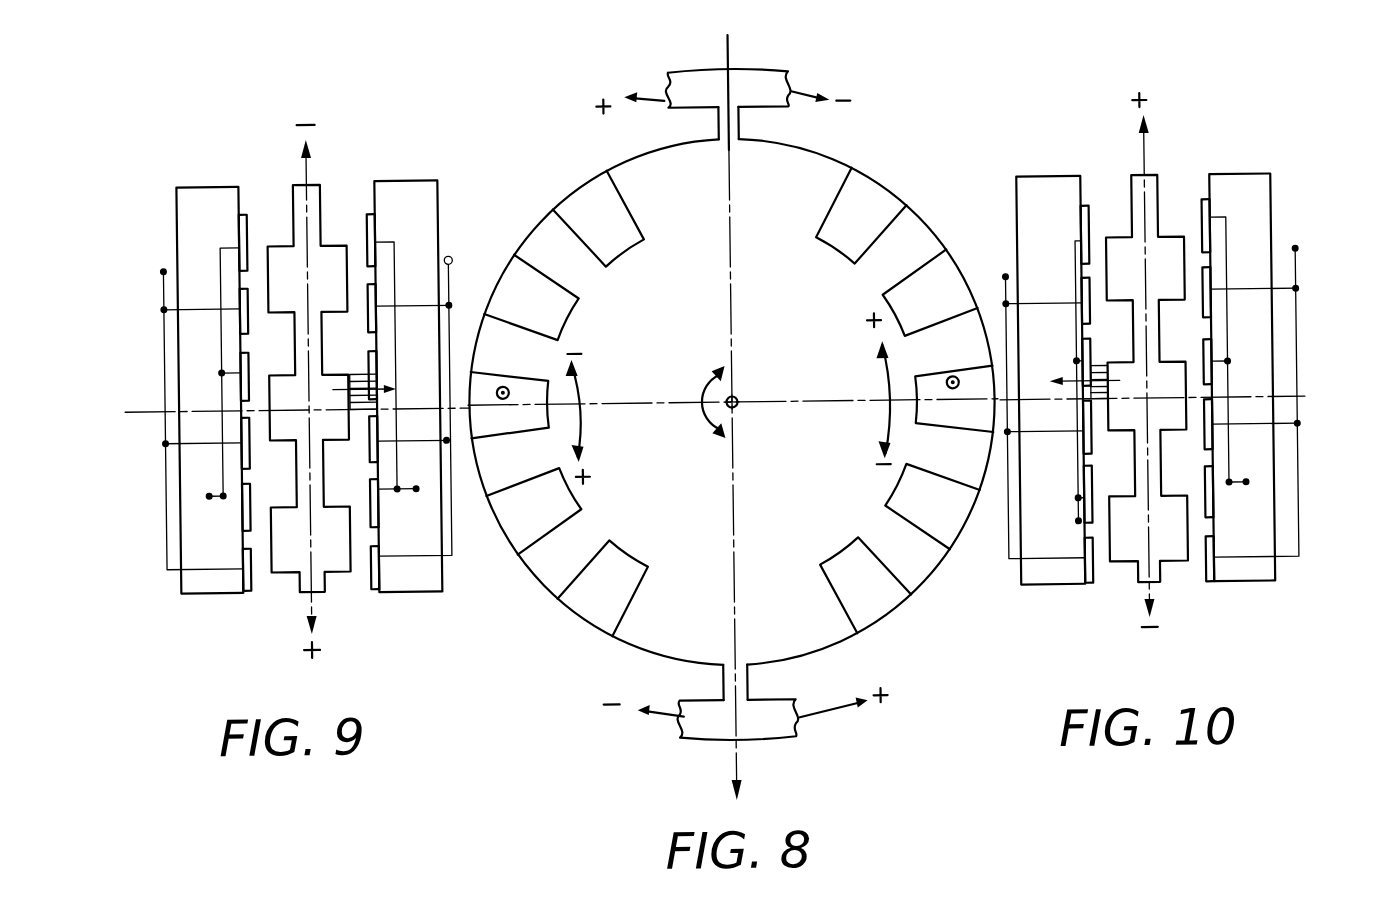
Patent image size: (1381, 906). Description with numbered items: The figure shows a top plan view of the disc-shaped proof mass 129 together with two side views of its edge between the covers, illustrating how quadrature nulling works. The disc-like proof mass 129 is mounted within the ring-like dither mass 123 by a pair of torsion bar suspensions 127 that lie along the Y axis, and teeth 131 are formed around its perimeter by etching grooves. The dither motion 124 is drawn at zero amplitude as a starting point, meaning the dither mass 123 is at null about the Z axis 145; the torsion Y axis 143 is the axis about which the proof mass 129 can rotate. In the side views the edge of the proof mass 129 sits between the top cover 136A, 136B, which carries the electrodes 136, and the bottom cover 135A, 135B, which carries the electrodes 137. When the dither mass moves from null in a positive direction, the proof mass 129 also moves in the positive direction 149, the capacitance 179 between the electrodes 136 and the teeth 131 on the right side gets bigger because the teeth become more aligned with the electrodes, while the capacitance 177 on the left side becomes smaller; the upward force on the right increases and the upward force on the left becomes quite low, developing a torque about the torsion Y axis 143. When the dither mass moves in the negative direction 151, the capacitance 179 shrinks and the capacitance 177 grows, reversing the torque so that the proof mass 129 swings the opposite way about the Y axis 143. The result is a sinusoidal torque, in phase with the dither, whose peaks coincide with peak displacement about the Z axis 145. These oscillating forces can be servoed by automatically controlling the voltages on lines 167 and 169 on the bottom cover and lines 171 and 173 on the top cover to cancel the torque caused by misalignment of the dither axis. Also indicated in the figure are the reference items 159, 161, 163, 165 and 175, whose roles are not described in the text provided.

In FIG. 8, the dither mass 123 is at (738, 80).
In FIG. 8, the dither motion 124 is at (668, 86).
In FIG. 8, the torsion bar suspensions 127 is at (740, 118).
In FIG. 9, the proof mass 129 is at (338, 578).
In FIG. 8, the proof mass 129 is at (915, 197).
In FIG. 10, the proof mass 129 is at (1178, 562).
In FIG. 9, the teeth 131 is at (337, 420).
In FIG. 10, the teeth 131 is at (1120, 410).
In FIG. 9, the bottom cover 135A is at (208, 186).
In FIG. 10, the bottom cover 135B is at (1240, 175).
In FIG. 9, the electrodes 136 is at (370, 218).
In FIG. 10, the electrodes 136 is at (1084, 205).
In FIG. 9, the top cover 136A is at (421, 593).
In FIG. 10, the top cover 136B is at (1047, 583).
In FIG. 9, the electrodes 137 is at (246, 214).
In FIG. 10, the electrodes 137 is at (1207, 200).
In FIG. 8, the torsion Y axis 143 is at (738, 755).
In FIG. 8, the Z axis 145 is at (733, 393).
In FIG. 8, the positive direction 149 is at (858, 389).
In FIG. 10, the positive direction 149 is at (1158, 125).
In FIG. 9, the negative direction 151 is at (303, 150).
In FIG. 8, the negative direction 151 is at (577, 390).
In FIG. 8, the X axis 159 is at (646, 405).
In FIG. 8, the left pivot point 161 is at (506, 383).
In FIG. 8, the right pivot point 163 is at (952, 378).
In FIG. 8, the rotation about Z 165 is at (700, 388).
In FIG. 9, the line 167 is at (163, 272).
In FIG. 10, the line 167 is at (1297, 262).
In FIG. 9, the line 169 is at (222, 472).
In FIG. 10, the line 169 is at (1233, 470).
In FIG. 9, the line 171 is at (448, 300).
In FIG. 9, the line 173 is at (392, 474).
In FIG. 9, the beam centerline 175 is at (311, 195).
In FIG. 10, the beam centerline 175 is at (1168, 547).
In FIG. 9, the capacitance 177 is at (353, 378).
In FIG. 10, the capacitance 179 is at (1100, 363).